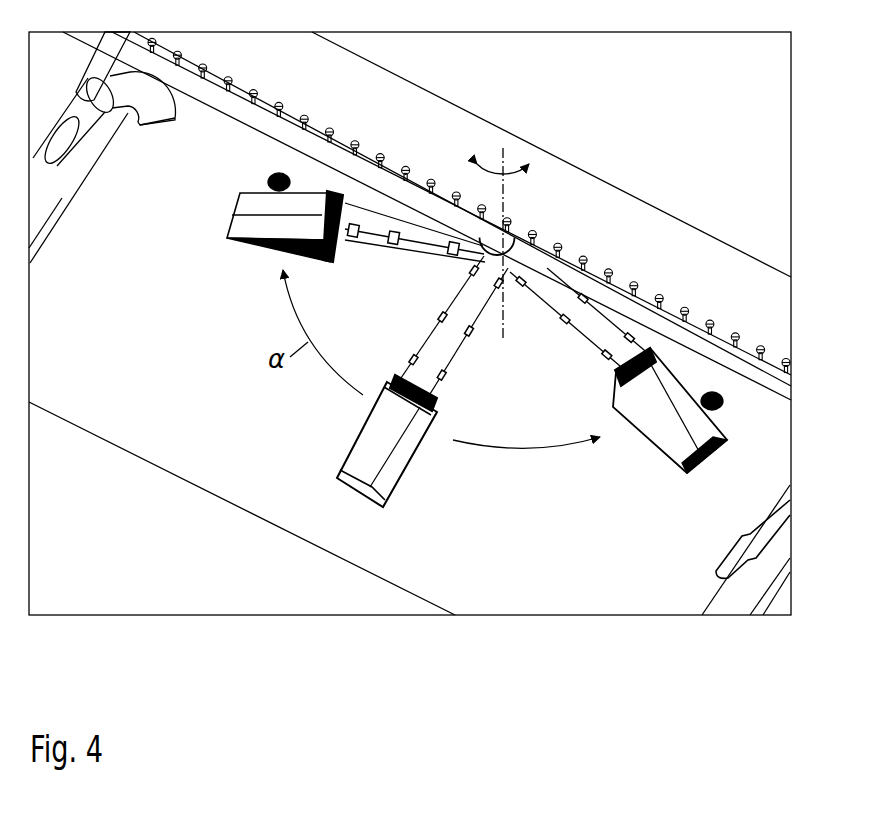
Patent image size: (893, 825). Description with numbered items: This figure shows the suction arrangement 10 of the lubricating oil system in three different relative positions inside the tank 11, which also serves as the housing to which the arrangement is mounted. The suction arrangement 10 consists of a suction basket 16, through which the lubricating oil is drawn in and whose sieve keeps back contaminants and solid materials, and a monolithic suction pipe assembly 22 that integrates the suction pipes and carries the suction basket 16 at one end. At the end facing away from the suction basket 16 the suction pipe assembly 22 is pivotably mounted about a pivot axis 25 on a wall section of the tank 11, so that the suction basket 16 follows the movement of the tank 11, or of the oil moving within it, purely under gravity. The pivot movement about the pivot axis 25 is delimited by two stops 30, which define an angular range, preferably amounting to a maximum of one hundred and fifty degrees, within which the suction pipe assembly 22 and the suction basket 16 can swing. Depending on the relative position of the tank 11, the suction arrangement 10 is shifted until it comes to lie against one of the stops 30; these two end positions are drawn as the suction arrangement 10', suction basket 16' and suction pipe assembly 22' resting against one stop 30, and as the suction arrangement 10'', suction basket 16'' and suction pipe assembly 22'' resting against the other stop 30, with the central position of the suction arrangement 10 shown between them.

The suction arrangement 10 is at (385, 458).
The suction arrangement in first end position 10' is at (240, 244).
The suction arrangement in second end position 10'' is at (729, 422).
The tank 11 is at (208, 474).
The suction basket 16 is at (368, 444).
The suction basket in first end position 16' is at (272, 245).
The suction basket in second end position 16'' is at (670, 422).
The suction pipe assembly 22 is at (443, 325).
The suction pipe assembly in first end position 22' is at (415, 188).
The suction pipe assembly in second end position 22'' is at (582, 293).
The pivot axis 25 is at (505, 338).
The stops 30 is at (267, 183).